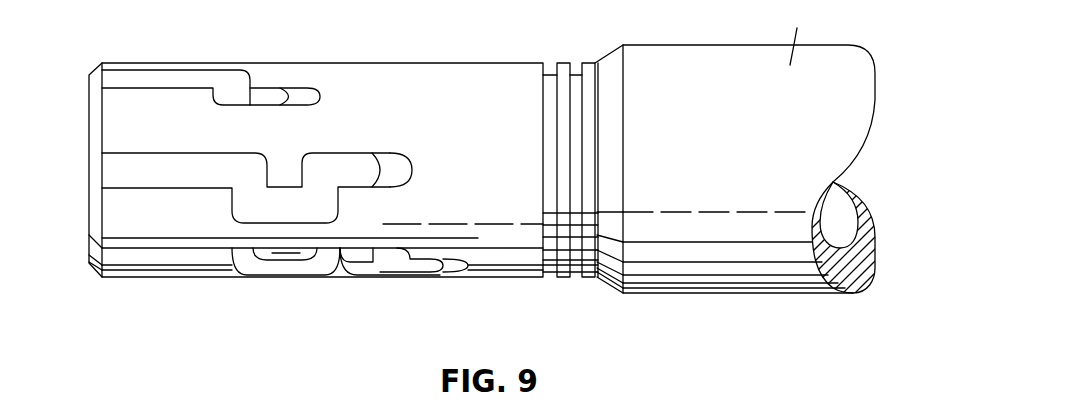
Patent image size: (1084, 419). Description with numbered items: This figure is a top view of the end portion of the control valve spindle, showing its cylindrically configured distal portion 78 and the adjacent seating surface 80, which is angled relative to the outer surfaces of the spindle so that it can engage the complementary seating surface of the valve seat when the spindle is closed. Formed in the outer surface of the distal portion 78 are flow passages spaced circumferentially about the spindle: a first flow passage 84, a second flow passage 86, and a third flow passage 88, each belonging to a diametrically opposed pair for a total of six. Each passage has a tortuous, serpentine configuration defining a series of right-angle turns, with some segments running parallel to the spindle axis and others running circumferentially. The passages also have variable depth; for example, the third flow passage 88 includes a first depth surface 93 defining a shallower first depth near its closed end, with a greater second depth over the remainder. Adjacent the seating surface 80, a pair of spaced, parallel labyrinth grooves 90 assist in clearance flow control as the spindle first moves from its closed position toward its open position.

The distal portion 78 is at (503, 82).
The seating surface 80 is at (612, 62).
The first flow passage 84 is at (403, 265).
The second flow passage 86 is at (282, 210).
The third flow passage 88 is at (132, 80).
The labyrinth groove 90 is at (553, 272).
The first depth surface 93 is at (305, 97).